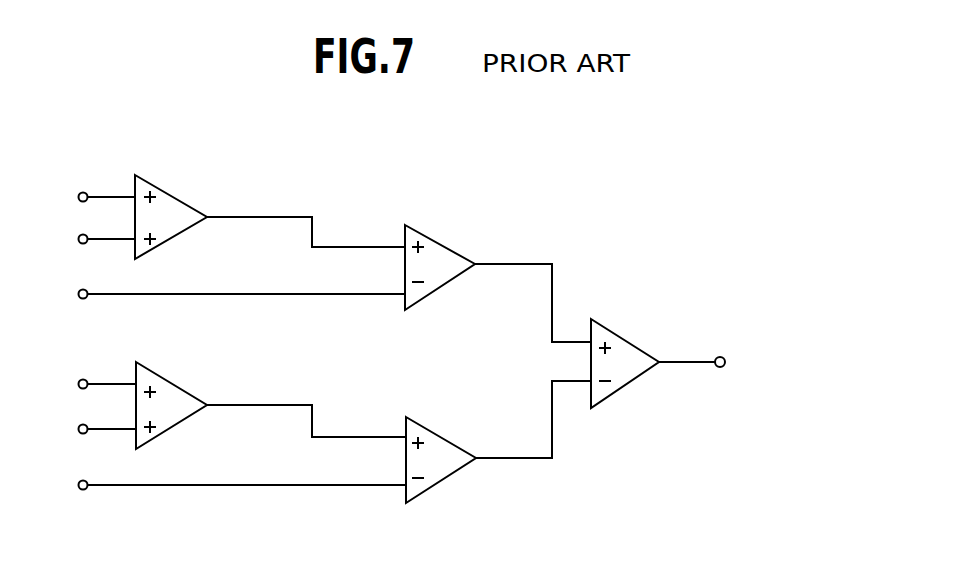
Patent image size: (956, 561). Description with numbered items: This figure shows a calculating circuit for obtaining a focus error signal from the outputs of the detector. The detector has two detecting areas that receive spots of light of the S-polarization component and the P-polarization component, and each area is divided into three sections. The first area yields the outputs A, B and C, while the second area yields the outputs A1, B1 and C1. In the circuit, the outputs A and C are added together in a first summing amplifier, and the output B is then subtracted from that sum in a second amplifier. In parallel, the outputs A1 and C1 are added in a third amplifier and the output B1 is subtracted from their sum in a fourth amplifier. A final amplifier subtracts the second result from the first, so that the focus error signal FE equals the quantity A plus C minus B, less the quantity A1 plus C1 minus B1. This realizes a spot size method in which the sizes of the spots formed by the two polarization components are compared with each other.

The output A is at (95, 196).
The output C is at (95, 238).
The output B is at (230, 294).
The output A' A1 is at (88, 379).
The output C' C1 is at (89, 424).
The output B' B1 is at (224, 479).
The focus error signal FE is at (743, 352).